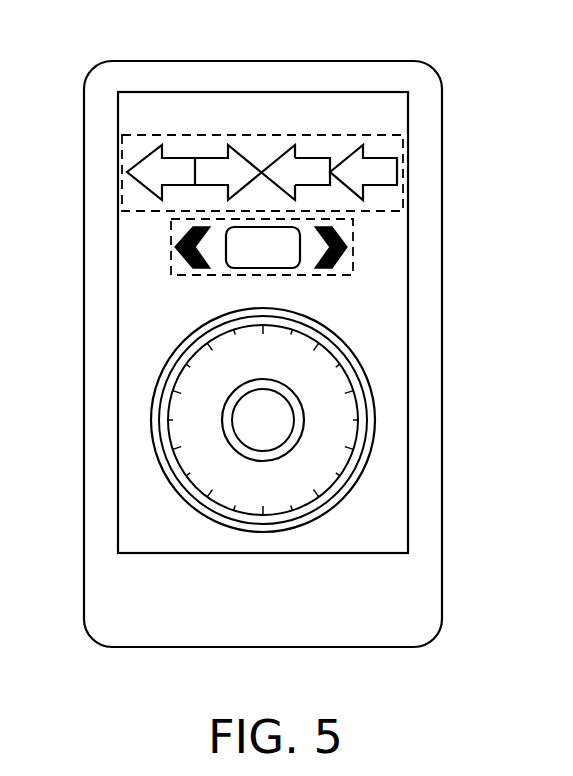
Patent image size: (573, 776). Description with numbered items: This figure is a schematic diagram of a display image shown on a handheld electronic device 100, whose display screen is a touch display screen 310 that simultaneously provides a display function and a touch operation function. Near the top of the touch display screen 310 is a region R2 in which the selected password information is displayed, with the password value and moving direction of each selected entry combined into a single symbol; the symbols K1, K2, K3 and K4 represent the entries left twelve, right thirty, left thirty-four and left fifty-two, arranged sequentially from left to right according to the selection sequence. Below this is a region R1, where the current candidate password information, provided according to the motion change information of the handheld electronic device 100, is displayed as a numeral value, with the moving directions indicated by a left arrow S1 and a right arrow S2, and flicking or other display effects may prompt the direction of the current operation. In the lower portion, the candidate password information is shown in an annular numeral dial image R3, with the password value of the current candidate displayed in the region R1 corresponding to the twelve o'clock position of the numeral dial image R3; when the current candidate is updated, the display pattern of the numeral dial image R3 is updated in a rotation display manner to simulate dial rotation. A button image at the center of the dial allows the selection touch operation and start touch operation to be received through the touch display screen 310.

The handheld electronic device 100 is at (504, 697).
The touch display screen 310 is at (409, 508).
The region R2 is at (403, 160).
The region R1 is at (355, 270).
The annular numeral dial image R3 is at (377, 418).
The symbol K1 is at (178, 158).
The symbol K2 is at (218, 158).
The symbol K3 is at (313, 158).
The symbol K4 is at (380, 158).
The left arrow S1 is at (180, 252).
The right arrow S2 is at (348, 246).